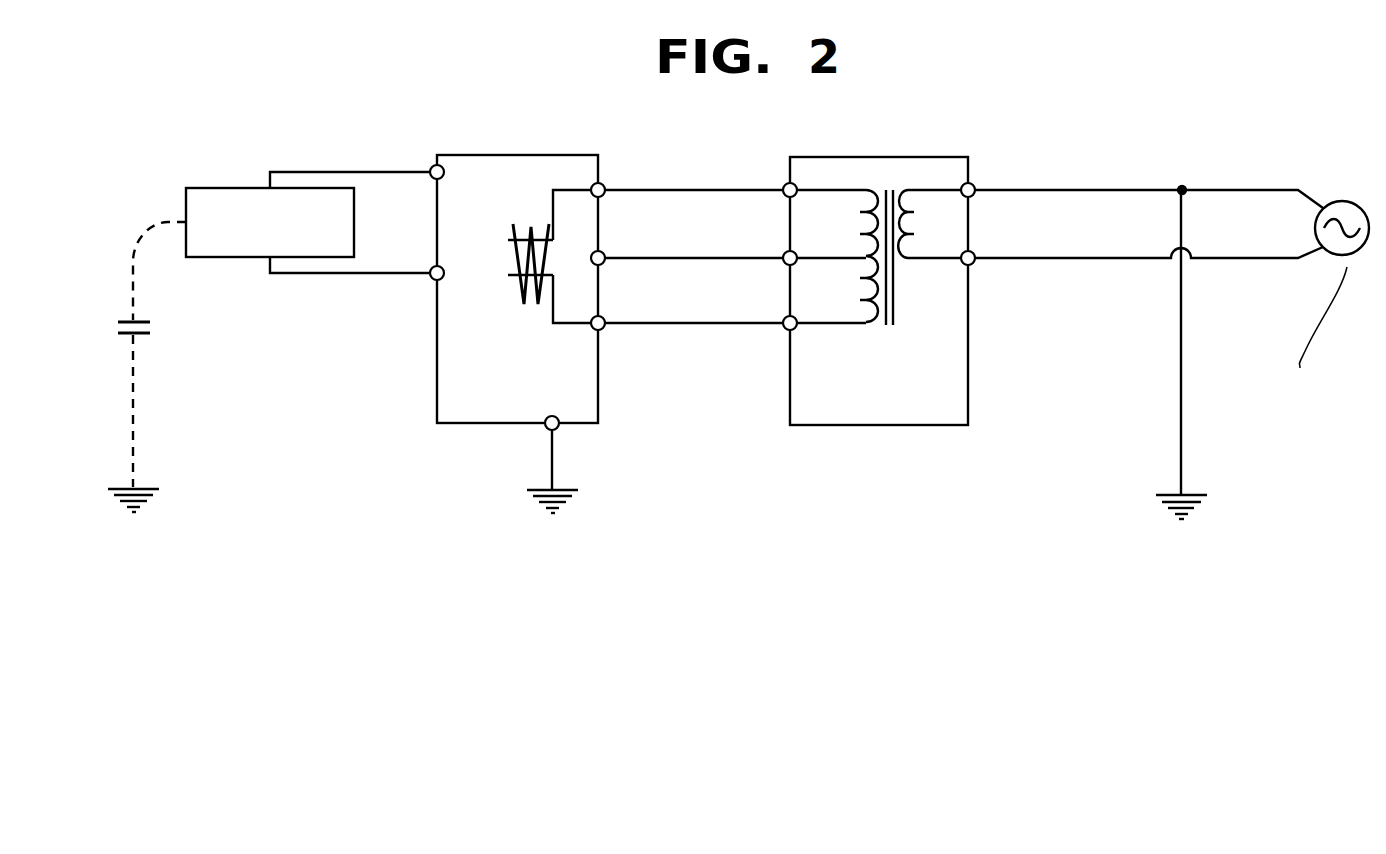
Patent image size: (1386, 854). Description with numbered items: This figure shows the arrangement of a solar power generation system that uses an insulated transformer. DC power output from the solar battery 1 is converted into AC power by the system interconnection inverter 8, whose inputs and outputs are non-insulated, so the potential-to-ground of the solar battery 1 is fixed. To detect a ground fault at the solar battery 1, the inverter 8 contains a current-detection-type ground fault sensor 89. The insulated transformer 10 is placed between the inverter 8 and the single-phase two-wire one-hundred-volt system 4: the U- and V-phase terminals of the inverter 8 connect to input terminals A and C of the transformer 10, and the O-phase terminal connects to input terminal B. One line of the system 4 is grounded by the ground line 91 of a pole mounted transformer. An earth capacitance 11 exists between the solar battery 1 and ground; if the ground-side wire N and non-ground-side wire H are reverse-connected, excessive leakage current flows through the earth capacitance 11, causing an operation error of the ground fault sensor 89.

The solar battery 1 is at (215, 188).
The earth capacitance 11 is at (150, 328).
The system interconnection inverter 8 is at (468, 155).
The ground fault sensor 89 is at (532, 214).
The insulated transformer 10 is at (853, 155).
The single-phase 100-V system 4 is at (1342, 200).
The ground line 91 is at (1178, 437).